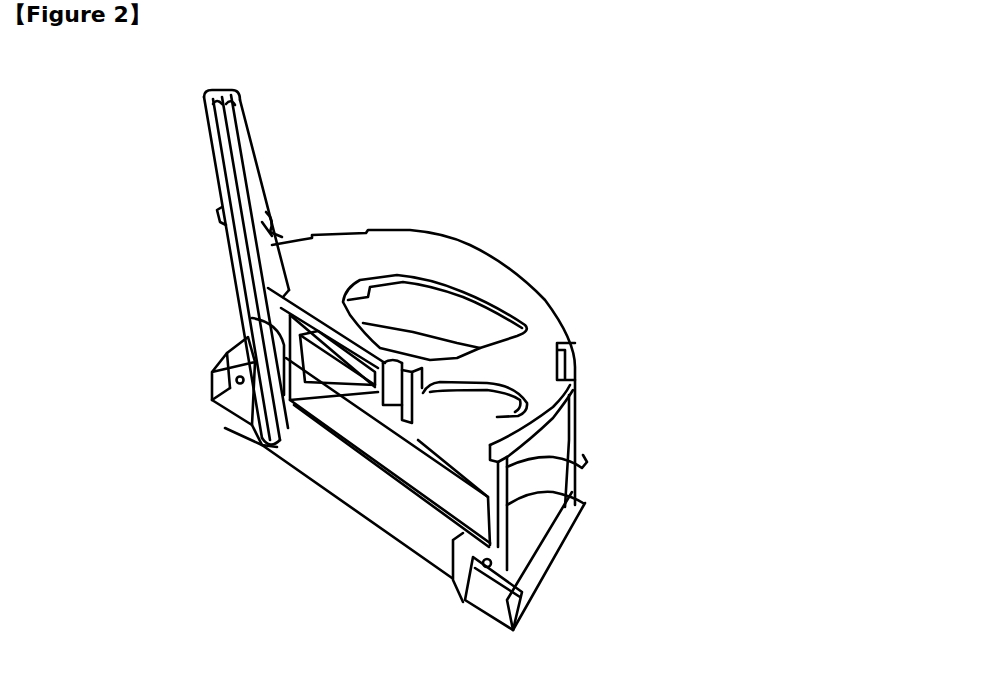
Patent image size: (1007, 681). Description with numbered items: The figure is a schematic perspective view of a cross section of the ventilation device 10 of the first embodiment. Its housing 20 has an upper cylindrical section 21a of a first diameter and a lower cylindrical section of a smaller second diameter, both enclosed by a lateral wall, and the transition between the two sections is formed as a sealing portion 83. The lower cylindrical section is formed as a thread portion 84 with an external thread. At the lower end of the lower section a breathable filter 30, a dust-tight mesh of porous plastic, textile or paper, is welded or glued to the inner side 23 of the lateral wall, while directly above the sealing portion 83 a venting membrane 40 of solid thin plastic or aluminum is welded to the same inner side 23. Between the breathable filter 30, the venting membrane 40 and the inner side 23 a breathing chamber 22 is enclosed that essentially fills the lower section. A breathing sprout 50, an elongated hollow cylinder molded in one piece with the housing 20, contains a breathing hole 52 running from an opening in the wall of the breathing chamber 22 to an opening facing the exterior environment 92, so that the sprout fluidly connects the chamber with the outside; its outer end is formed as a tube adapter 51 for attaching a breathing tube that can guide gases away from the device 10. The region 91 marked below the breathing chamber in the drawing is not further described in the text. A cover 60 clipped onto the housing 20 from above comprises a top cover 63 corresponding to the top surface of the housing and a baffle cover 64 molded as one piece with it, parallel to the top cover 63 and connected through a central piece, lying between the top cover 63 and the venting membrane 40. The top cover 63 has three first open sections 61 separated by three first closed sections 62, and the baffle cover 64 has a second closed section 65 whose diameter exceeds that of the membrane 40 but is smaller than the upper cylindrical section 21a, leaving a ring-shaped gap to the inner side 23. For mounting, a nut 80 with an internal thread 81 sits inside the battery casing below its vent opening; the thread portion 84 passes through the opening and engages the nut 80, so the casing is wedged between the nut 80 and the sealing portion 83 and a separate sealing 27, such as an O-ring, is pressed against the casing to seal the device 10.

The ventilation device 10 is at (641, 266).
The housing 20 is at (543, 328).
The upper cylindrical section 21a is at (565, 510).
The breathing chamber 22 is at (388, 452).
The inner side of the lateral wall 23 is at (580, 472).
The separate sealing 27 is at (225, 393).
The breathable filter 30 is at (327, 488).
The venting membrane 40 is at (417, 500).
The breathing sprout 50 is at (262, 222).
The tube adapter 51 is at (246, 145).
The breathing hole 52 is at (222, 147).
The cover 60 is at (290, 347).
The first open sections 61 is at (424, 302).
The first closed sections 62 is at (523, 374).
The top cover 63 is at (525, 297).
The baffle cover 64 is at (507, 540).
The second closed section 65 is at (560, 386).
The nut 80 is at (530, 592).
The internal thread 81 is at (262, 441).
The sealing portion 83 is at (227, 355).
The thread portion 84 is at (468, 592).
The first region 91 is at (357, 511).
The exterior environment 92 is at (440, 251).